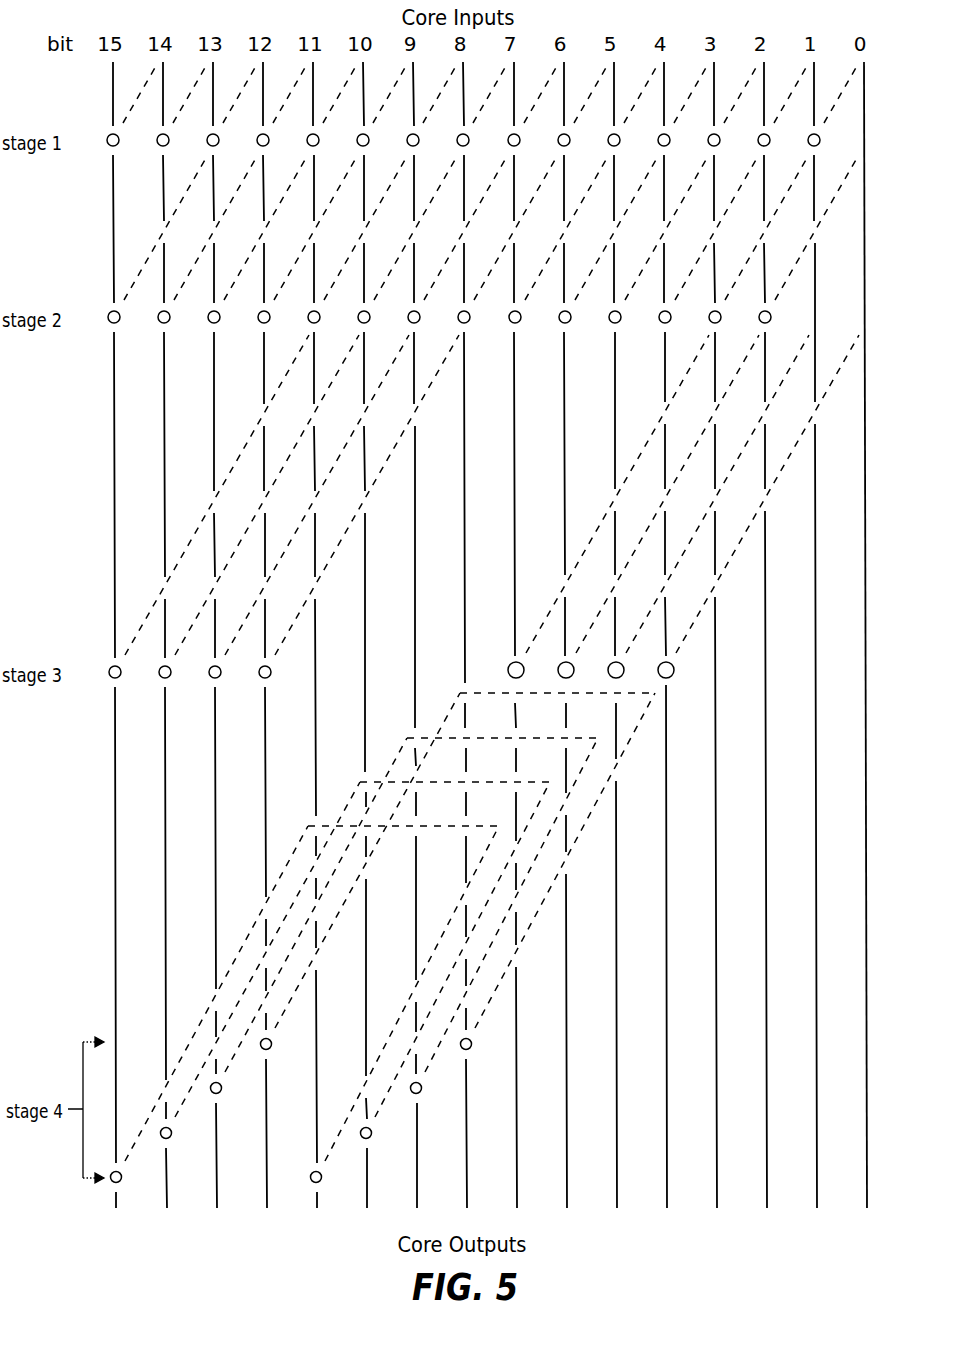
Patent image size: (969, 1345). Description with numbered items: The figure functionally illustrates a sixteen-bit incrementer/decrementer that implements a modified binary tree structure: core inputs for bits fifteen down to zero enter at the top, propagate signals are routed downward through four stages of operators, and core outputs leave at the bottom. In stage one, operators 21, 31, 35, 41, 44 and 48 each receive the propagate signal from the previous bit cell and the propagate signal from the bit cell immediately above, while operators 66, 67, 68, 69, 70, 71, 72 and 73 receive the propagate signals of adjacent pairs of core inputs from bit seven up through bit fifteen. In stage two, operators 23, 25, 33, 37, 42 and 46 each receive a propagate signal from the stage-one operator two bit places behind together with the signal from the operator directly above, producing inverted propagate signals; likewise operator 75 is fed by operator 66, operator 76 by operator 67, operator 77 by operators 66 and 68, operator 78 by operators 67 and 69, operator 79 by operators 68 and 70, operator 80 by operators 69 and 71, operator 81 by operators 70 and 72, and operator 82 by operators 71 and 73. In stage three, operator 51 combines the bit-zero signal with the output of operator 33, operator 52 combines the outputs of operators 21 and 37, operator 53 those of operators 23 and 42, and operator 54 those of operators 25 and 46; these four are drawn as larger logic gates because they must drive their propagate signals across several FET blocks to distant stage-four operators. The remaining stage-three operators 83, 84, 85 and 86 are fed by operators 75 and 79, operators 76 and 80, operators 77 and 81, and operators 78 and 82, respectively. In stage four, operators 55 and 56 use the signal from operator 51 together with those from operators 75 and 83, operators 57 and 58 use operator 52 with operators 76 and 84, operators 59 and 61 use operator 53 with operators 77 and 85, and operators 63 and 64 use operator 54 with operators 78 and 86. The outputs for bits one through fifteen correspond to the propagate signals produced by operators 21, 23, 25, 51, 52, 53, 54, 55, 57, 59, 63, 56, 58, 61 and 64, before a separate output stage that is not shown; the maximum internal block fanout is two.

The operator 21 is at (820, 140).
The operator 23 is at (771, 317).
The operator 25 is at (721, 317).
The operator 31 is at (770, 140).
The operator 33 is at (671, 317).
The operator 35 is at (720, 140).
The operator 37 is at (621, 317).
The operator 41 is at (670, 140).
The operator 42 is at (571, 317).
The operator 44 is at (620, 140).
The operator 46 is at (521, 317).
The operator 48 is at (570, 140).
The operator 51 is at (520, 140).
The operator 52 is at (624, 670).
The operator 53 is at (574, 670).
The operator 54 is at (524, 670).
The operator 55 is at (472, 1044).
The operator 56 is at (272, 1044).
The operator 57 is at (422, 1088).
The operator 58 is at (222, 1088).
The operator 59 is at (372, 1133).
The operator 61 is at (172, 1133).
The operator 63 is at (322, 1177).
The operator 64 is at (122, 1177).
The operator 66 is at (469, 140).
The operator 67 is at (419, 140).
The operator 68 is at (369, 140).
The operator 69 is at (319, 140).
The operator 70 is at (269, 140).
The operator 71 is at (219, 140).
The operator 72 is at (169, 140).
The operator 73 is at (119, 140).
The operator 75 is at (470, 317).
The operator 76 is at (420, 317).
The operator 77 is at (370, 317).
The operator 78 is at (320, 317).
The operator 79 is at (270, 317).
The operator 80 is at (220, 317).
The operator 81 is at (170, 317).
The operator 82 is at (120, 317).
The operator 83 is at (271, 672).
The operator 84 is at (221, 672).
The operator 85 is at (171, 672).
The operator 86 is at (121, 672).